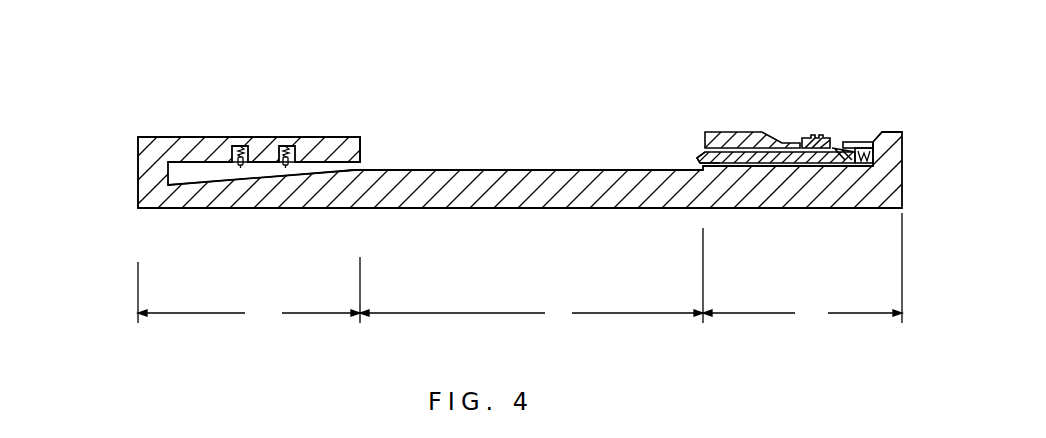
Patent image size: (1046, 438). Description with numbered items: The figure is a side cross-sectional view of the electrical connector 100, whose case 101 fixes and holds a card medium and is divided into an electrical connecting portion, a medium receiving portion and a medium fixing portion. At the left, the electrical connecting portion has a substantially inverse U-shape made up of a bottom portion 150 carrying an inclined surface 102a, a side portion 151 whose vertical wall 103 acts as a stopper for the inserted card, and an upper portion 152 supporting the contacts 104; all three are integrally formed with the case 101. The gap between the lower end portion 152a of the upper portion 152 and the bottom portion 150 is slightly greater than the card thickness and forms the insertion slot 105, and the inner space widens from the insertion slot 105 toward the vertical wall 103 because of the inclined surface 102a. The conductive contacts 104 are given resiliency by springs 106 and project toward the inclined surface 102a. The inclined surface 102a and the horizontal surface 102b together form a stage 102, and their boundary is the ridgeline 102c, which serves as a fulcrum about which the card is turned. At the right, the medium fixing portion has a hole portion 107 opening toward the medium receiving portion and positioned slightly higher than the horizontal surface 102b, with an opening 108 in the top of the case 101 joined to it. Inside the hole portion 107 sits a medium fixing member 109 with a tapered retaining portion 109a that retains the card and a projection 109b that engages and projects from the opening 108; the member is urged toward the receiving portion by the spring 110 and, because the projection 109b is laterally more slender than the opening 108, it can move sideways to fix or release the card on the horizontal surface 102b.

The electrical connector 100 is at (893, 34).
The case 101 is at (563, 208).
The stage 102 is at (545, 162).
The inclined surface 102a is at (260, 178).
The horizontal surface 102b is at (497, 168).
The ridgeline 102c is at (362, 172).
The vertical wall 103 is at (174, 137).
The contacts 104 is at (240, 169).
The insertion slot 105 is at (365, 168).
The springs 106 is at (240, 137).
The hole portion 107 is at (698, 160).
The opening 108 is at (838, 137).
The medium fixing member 109 is at (757, 164).
The tapered retaining portion 109a is at (697, 158).
The projection 109b is at (820, 136).
The spring 110 is at (863, 164).
The bottom portion 150 is at (181, 209).
The side portion 151 is at (137, 177).
The upper portion 152 is at (220, 133).
The lower end portion 152a is at (350, 137).